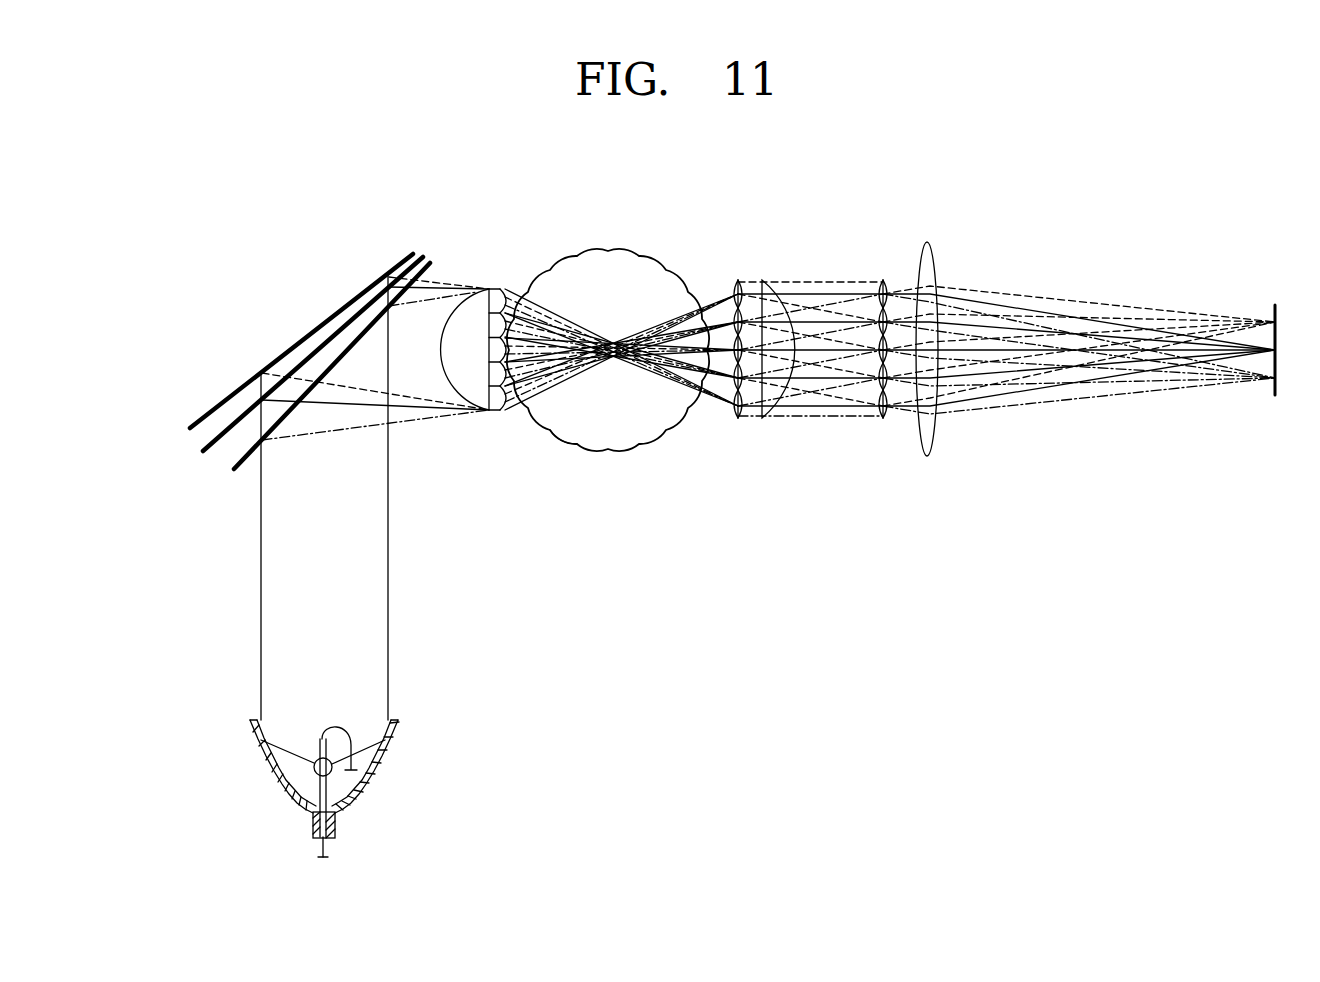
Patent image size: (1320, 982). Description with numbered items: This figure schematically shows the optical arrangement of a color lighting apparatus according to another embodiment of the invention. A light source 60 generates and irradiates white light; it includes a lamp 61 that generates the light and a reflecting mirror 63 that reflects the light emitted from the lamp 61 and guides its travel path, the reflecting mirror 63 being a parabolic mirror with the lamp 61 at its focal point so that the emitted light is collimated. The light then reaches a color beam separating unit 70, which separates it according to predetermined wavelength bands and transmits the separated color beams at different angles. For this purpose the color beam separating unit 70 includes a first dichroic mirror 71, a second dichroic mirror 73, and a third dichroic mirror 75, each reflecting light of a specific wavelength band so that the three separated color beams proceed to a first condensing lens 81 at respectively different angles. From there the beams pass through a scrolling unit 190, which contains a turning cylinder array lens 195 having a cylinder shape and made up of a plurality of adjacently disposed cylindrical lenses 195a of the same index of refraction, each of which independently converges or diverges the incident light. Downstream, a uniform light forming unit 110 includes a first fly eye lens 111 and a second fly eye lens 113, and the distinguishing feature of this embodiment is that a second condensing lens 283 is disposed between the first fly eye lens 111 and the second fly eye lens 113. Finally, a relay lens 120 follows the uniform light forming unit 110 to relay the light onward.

The light source 60 is at (246, 783).
The lamp 61 is at (333, 772).
The reflecting mirror 63 is at (283, 790).
The color beam separating unit 70 is at (233, 298).
The first dichroic mirror 71 is at (240, 462).
The second dichroic mirror 73 is at (210, 438).
The third dichroic mirror 75 is at (213, 405).
The first condensing lens 81 is at (484, 298).
The uniform light forming unit 110 is at (883, 500).
The first fly eye lens 111 is at (738, 418).
The second fly eye lens 113 is at (883, 418).
The relay lens 120 is at (928, 245).
The scrolling unit 190 is at (676, 243).
The turning cylinder array lens 195 is at (609, 270).
The cylindrical lenses 195a is at (575, 450).
The second condensing lens 283 is at (772, 280).